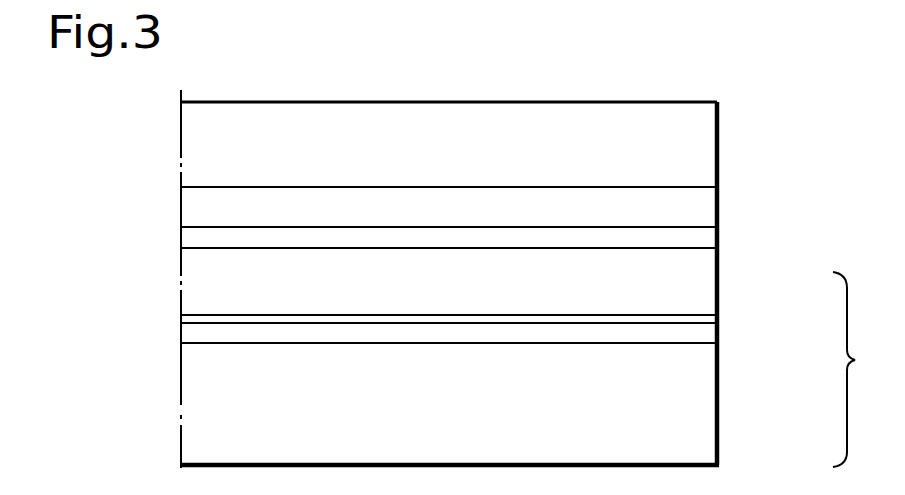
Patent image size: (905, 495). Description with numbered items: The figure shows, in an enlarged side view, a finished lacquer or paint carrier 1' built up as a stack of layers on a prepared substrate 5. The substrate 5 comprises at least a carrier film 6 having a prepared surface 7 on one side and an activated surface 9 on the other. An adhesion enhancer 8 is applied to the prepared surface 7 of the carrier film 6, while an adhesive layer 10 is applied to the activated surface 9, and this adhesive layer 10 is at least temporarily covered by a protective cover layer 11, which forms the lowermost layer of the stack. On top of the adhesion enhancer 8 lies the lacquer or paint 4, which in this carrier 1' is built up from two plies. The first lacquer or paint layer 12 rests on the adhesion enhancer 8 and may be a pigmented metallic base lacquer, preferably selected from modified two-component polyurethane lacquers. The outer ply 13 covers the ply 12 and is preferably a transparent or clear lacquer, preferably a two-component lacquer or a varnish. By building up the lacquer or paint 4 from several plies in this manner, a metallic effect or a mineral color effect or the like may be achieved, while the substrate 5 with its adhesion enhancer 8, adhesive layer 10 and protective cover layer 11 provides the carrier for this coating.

The carrier 1' is at (408, 279).
The lacquer or paint 4 is at (660, 188).
The substrate 5 is at (853, 369).
The carrier film 6 is at (683, 278).
The prepared surface 7 is at (223, 248).
The adhesion enhancer 8 is at (687, 243).
The activated surface 9 is at (223, 318).
The adhesive layer 10 is at (687, 338).
The protective cover layer 11 is at (682, 413).
The lacquer or paint layer 12 is at (687, 213).
The clear lacquer or varnish ply 13 is at (592, 140).